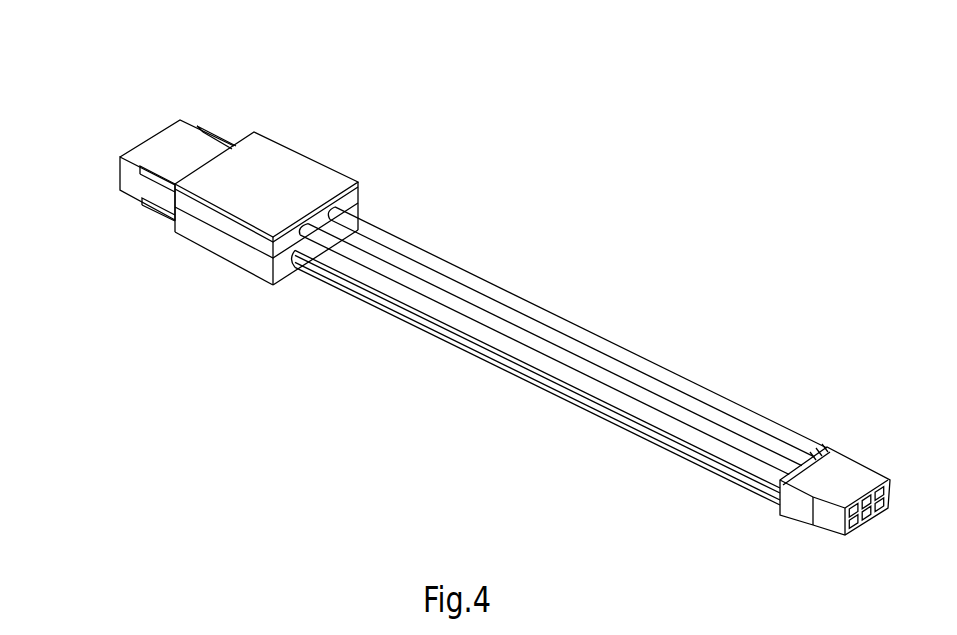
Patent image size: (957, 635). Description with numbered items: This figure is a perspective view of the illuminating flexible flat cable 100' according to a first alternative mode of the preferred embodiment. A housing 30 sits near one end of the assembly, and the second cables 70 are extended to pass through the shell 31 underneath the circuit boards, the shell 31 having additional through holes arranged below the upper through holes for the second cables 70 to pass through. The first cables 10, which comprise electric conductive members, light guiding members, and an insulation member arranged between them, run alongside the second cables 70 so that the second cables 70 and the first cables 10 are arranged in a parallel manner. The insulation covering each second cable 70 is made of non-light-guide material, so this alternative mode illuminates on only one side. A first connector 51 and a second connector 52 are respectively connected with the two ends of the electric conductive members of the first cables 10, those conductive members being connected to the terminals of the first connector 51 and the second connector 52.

The illuminating flexible flat cable 100' is at (614, 111).
The housing box 30 is at (312, 135).
The shell 31 is at (213, 242).
The first connector 51 is at (152, 152).
The first cables 10 is at (435, 262).
The second cables 70 is at (354, 292).
The second connector 52 is at (799, 520).